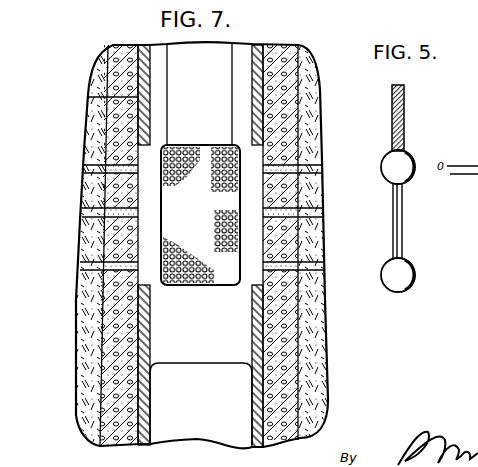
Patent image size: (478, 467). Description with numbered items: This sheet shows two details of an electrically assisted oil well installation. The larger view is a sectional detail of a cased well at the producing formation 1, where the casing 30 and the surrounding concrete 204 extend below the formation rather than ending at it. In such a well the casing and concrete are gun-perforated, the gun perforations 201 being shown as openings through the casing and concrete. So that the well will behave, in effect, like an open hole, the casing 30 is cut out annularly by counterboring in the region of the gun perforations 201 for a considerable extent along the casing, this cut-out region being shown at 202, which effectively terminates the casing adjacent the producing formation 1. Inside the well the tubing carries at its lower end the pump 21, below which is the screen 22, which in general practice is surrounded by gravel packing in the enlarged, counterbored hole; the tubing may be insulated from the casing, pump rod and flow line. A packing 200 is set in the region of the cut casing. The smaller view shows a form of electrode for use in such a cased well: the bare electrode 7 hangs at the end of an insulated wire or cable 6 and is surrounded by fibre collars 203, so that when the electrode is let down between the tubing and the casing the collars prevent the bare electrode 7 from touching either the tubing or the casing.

In FIG. 7, the producing formation 1 is at (80, 237).
In FIG. 7, the pump barrel 21 is at (214, 83).
In FIG. 7, the screen 22 is at (196, 156).
In FIG. 7, the casing 30 is at (108, 97).
In FIG. 7, the packing 200 is at (233, 393).
In FIG. 7, the gun perforations 201 is at (83, 166).
In FIG. 7, the cut-out region of casing 202 is at (147, 194).
In FIG. 7, the concrete 204 is at (113, 323).
In FIG. 5, the insulated wire or cable 6 is at (405, 108).
In FIG. 5, the bare electrode 7 is at (405, 222).
In FIG. 5, the fibre collars 203 is at (413, 159).